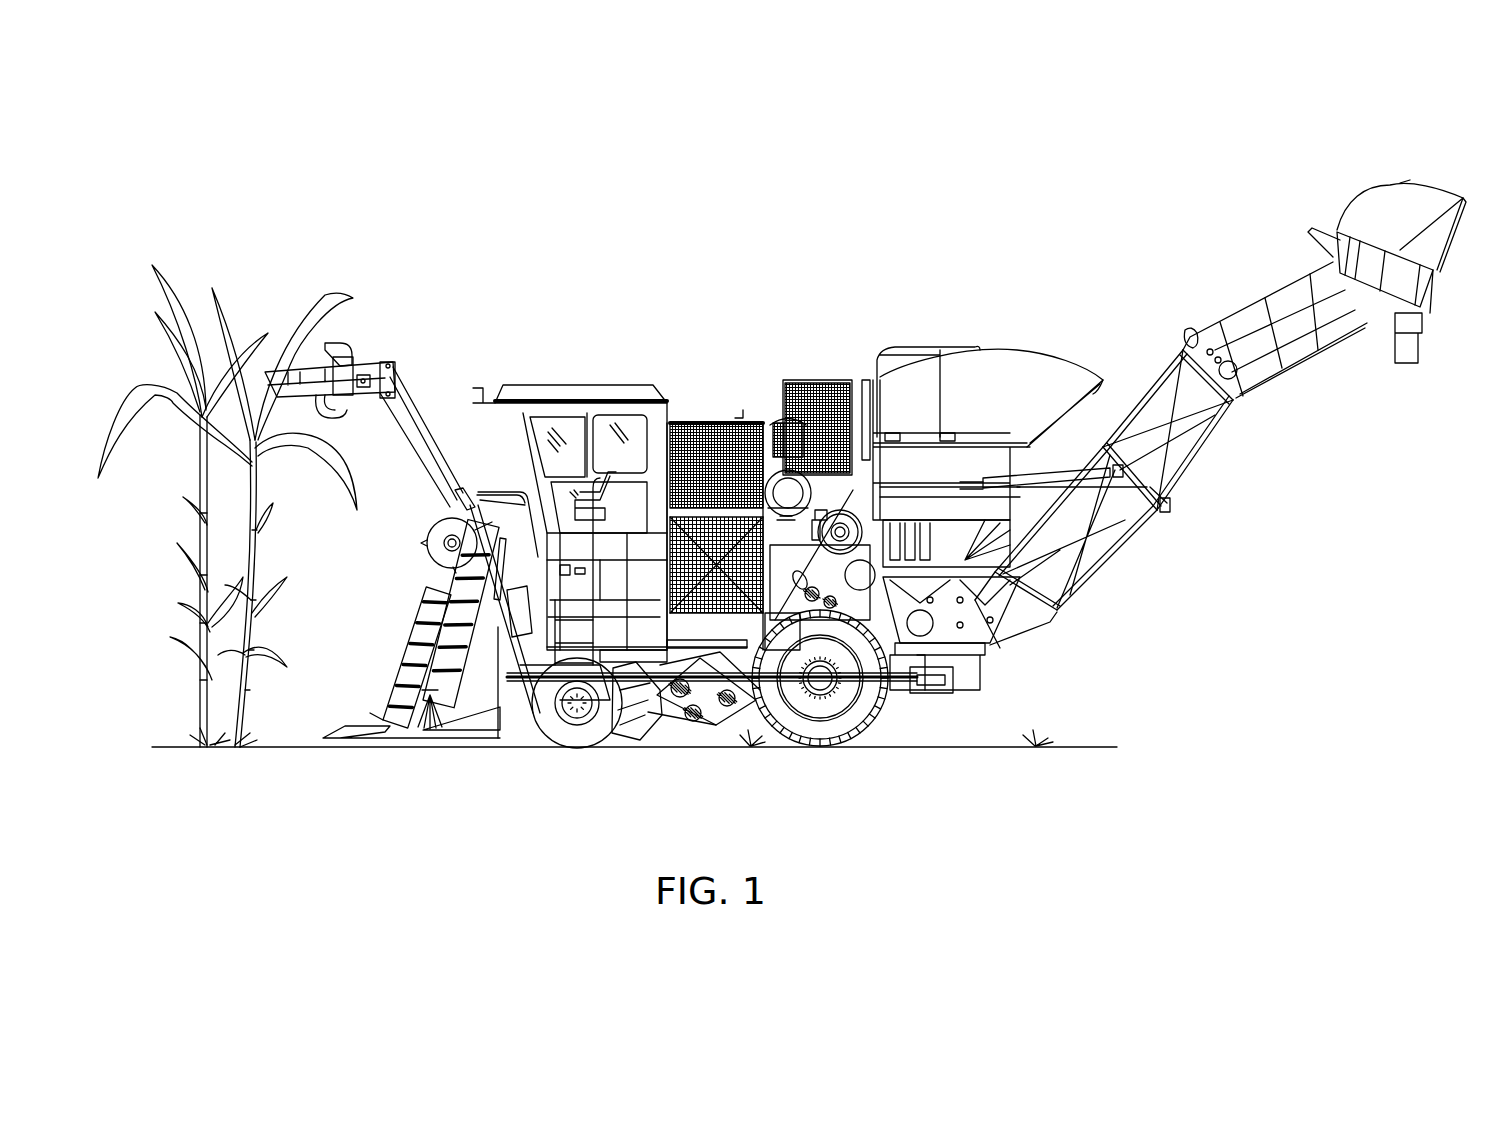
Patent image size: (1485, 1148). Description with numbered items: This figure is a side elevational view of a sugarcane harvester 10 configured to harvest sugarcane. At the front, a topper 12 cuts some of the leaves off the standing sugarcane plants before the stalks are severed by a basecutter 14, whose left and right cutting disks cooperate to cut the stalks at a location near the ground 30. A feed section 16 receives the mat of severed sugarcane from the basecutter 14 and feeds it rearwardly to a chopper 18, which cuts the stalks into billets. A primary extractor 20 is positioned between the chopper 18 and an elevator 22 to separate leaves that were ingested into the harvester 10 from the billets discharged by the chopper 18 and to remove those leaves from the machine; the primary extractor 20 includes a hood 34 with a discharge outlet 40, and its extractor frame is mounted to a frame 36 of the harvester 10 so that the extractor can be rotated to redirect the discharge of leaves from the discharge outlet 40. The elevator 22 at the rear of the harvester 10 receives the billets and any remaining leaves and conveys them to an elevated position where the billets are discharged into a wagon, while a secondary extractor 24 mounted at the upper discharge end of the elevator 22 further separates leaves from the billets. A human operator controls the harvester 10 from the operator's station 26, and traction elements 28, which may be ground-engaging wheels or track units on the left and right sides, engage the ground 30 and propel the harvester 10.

The sugarcane harvester 10 is at (490, 173).
The topper 12 is at (300, 363).
The basecutter 14 is at (608, 733).
The feed section 16 is at (710, 717).
The chopper 18 is at (833, 567).
The primary extractor 20 is at (1020, 332).
The elevator 22 is at (1213, 323).
The secondary extractor 24 is at (1383, 184).
The operator's station 26 is at (550, 385).
The traction elements 28 is at (558, 732).
The ground 30 is at (994, 747).
The hood 34 is at (1047, 358).
The frame 36 is at (785, 640).
The discharge outlet 40 is at (1100, 397).